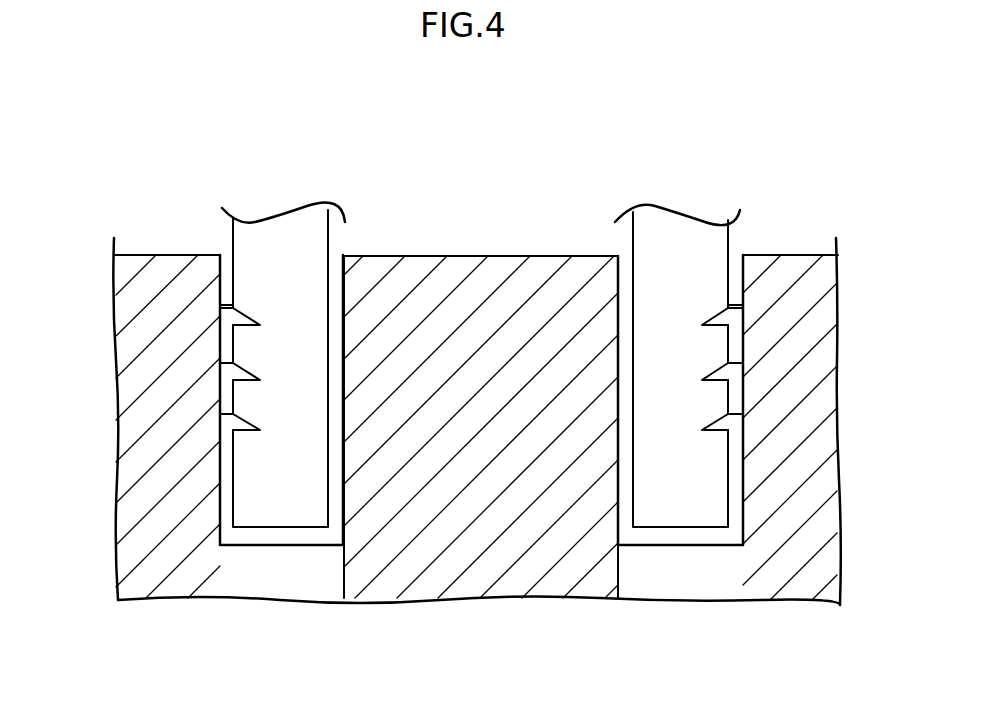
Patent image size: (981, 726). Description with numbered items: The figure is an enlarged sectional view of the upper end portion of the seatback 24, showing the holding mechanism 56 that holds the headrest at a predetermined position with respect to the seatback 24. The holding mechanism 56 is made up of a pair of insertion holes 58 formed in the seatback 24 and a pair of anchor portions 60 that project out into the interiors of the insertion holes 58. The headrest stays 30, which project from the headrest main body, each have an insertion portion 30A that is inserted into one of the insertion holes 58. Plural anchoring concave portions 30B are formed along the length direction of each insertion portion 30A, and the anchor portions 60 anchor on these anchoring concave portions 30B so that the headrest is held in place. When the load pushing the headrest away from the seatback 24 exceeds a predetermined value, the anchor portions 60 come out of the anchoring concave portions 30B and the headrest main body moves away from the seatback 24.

The seatback 24 is at (462, 255).
The headrest stay 30 is at (676, 528).
The insertion portion 30A is at (265, 502).
The anchoring concave portion 30B is at (232, 318).
The holding mechanism 56 is at (806, 163).
The insertion hole 58 is at (345, 490).
The anchor portion 60 is at (226, 305).